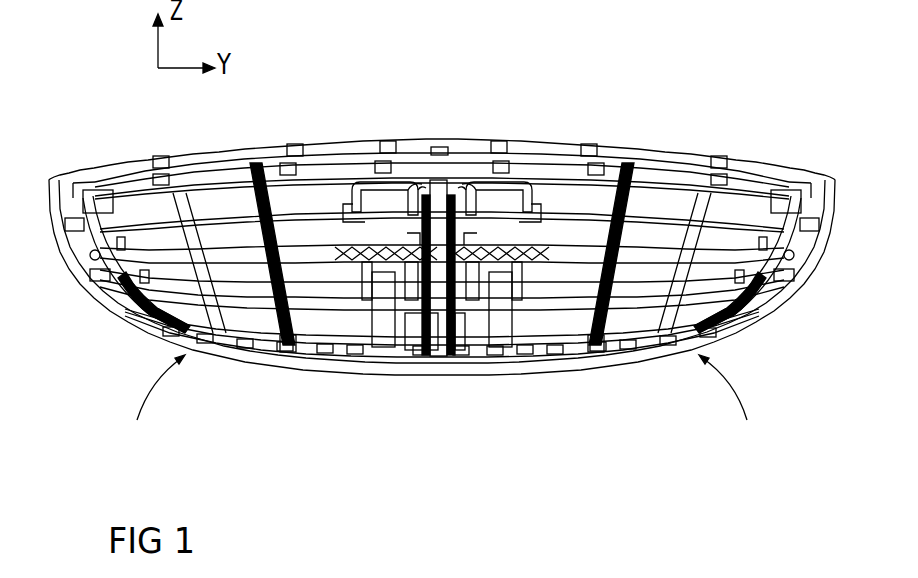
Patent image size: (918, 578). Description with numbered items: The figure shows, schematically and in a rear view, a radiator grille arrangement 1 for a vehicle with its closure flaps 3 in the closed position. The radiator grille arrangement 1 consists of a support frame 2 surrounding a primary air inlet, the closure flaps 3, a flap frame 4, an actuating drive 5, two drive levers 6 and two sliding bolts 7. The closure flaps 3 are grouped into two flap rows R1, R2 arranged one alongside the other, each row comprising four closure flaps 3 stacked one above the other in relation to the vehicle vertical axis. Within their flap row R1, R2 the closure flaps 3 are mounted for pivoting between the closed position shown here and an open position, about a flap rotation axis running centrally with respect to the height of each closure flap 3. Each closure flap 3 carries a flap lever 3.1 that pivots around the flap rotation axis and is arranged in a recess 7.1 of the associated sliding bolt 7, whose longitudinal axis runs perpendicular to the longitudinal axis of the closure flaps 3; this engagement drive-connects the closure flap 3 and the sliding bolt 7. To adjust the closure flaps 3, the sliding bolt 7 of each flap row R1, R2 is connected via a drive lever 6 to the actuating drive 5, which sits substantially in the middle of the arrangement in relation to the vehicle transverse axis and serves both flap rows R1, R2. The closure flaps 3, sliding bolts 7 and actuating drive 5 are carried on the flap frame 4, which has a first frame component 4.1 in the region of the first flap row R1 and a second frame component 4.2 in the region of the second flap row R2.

The radiator grille arrangement 1 is at (96, 62).
The support frame 2 is at (62, 188).
The closure flaps 3 is at (215, 193).
The flap lever 3.1 is at (321, 237).
The flap frame 4 is at (160, 232).
The first frame component 4.1 is at (152, 323).
The second frame component 4.2 is at (732, 323).
The actuating drive 5 is at (422, 356).
The drive levers 6 is at (380, 200).
The sliding bolts 7 is at (297, 205).
The recess 7.1 is at (298, 347).
The first flap row R1 is at (151, 403).
The second flap row R2 is at (734, 403).